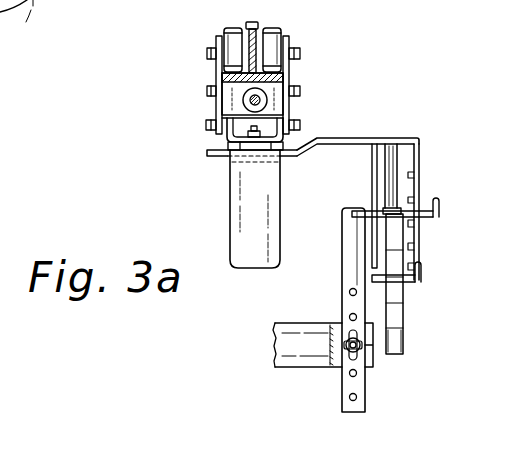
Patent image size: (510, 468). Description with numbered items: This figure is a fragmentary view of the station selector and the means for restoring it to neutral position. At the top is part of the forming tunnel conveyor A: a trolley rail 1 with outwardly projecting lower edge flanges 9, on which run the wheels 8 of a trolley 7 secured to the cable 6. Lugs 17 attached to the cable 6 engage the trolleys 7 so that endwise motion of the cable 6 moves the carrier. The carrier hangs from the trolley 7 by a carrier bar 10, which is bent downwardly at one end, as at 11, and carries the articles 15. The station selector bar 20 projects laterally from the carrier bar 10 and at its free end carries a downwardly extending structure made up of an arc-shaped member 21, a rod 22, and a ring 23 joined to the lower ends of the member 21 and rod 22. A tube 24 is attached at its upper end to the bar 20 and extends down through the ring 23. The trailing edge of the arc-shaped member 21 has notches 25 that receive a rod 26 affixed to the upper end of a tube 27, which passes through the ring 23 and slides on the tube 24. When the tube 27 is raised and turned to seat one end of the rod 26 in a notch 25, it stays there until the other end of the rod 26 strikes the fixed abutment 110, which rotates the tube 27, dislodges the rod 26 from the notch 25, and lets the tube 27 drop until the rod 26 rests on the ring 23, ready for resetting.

The trolley rail 1 is at (254, 42).
The wheels 8 is at (225, 31).
The forming tunnel conveyor A is at (224, 79).
The lower edge flanges 9 is at (283, 78).
The cable 6 is at (250, 100).
The trolley 7 is at (287, 102).
The lug 17 is at (228, 115).
The carrier bar 10 is at (248, 152).
The downwardly bent end 11 is at (231, 222).
The bar 20 is at (356, 138).
The arc-shaped member 21 is at (418, 150).
The rod 22 is at (372, 163).
The tube 24 is at (388, 186).
The rod 26 is at (434, 208).
The notches 25 is at (420, 258).
The ring 23 is at (408, 283).
The tube 27 is at (403, 340).
The abutment 110 is at (347, 272).
The articles 15 is at (16, 21).